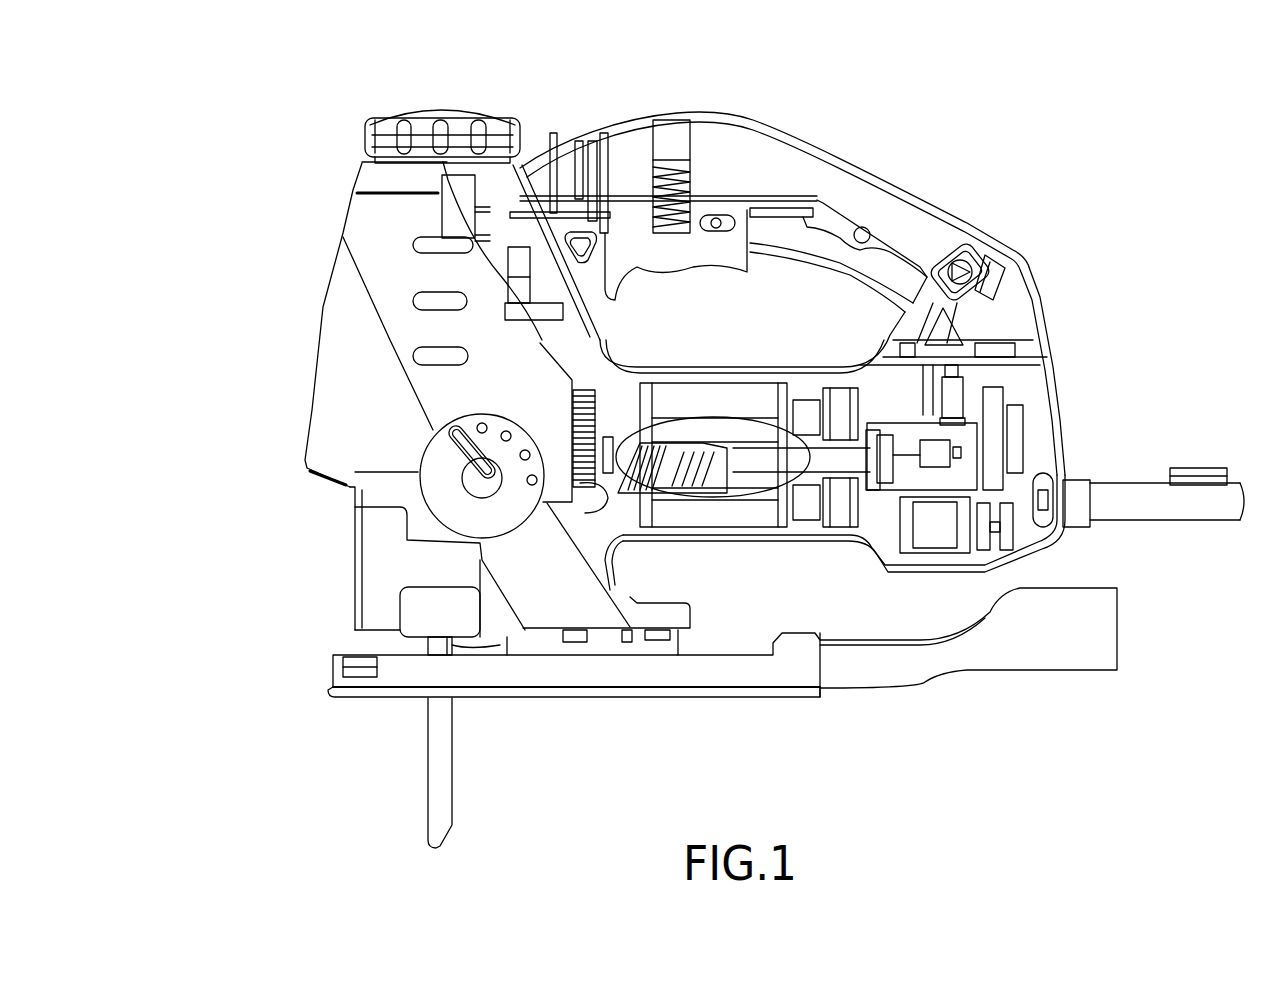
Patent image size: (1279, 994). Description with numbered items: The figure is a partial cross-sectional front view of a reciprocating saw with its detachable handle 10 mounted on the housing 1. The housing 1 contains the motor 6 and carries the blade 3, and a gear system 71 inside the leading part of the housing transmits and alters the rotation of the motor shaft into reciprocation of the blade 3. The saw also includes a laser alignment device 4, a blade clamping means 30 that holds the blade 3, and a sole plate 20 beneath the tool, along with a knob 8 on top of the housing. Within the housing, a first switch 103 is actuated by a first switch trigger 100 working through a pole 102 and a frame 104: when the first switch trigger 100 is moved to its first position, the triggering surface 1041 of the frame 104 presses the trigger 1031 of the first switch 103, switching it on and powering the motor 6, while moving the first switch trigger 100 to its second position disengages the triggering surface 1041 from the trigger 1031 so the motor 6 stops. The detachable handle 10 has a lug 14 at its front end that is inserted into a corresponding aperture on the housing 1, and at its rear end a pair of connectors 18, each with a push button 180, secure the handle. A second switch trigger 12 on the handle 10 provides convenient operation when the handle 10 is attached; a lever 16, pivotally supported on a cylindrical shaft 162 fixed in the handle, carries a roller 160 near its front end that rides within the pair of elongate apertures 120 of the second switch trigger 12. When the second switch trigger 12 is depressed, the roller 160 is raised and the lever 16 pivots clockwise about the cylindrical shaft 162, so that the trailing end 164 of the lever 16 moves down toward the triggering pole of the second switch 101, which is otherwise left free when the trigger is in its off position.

The housing 1 is at (250, 285).
The detachable handle 10 is at (803, 88).
The speed adjusting knob 8 is at (435, 100).
The gear system 71 is at (510, 368).
The laser alignment device 4 is at (333, 480).
The lug 14 is at (537, 182).
The roller 160 is at (725, 212).
The second switch trigger 12 is at (635, 260).
The elongate apertures 120 is at (708, 230).
The lever 16 is at (923, 247).
The cylindrical shaft 162 is at (867, 230).
The push button 180 is at (987, 267).
The connectors 18 is at (997, 300).
The trailing end 164 is at (947, 343).
The motor 6 is at (693, 397).
The first switch trigger 100 is at (663, 487).
The pole 102 is at (800, 457).
The second switch 101 is at (957, 395).
The first switch 103 is at (937, 447).
The trigger 1031 is at (960, 453).
The triggering surface 1041 is at (1027, 465).
The frame 104 is at (890, 490).
The blade clamping means 30 is at (420, 617).
The blade 3 is at (438, 772).
The sole plate 20 is at (742, 717).